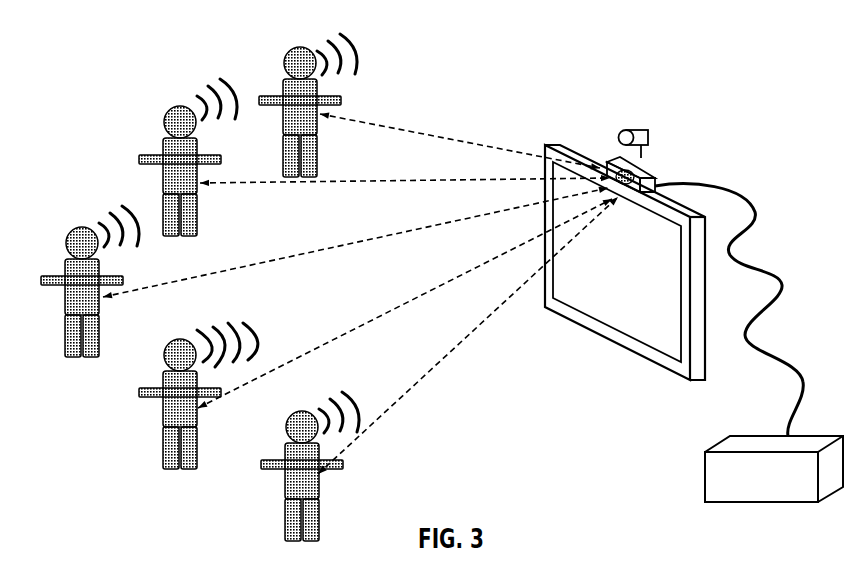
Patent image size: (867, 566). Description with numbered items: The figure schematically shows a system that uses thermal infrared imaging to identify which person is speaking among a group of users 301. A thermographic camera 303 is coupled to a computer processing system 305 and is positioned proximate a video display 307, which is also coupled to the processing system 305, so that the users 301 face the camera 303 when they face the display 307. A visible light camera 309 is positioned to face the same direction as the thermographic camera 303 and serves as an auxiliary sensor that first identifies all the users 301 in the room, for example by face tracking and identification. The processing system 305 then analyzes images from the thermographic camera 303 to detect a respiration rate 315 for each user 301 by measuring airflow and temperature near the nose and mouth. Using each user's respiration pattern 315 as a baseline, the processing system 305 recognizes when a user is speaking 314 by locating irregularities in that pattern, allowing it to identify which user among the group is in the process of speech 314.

The users 301 is at (286, 62).
The thermographic camera 303 is at (657, 175).
The computer processing system 305 is at (743, 437).
The video display 307 is at (543, 238).
The visible light camera 309 is at (635, 131).
The speaking 314 is at (253, 322).
The respiration rate 315 is at (361, 40).